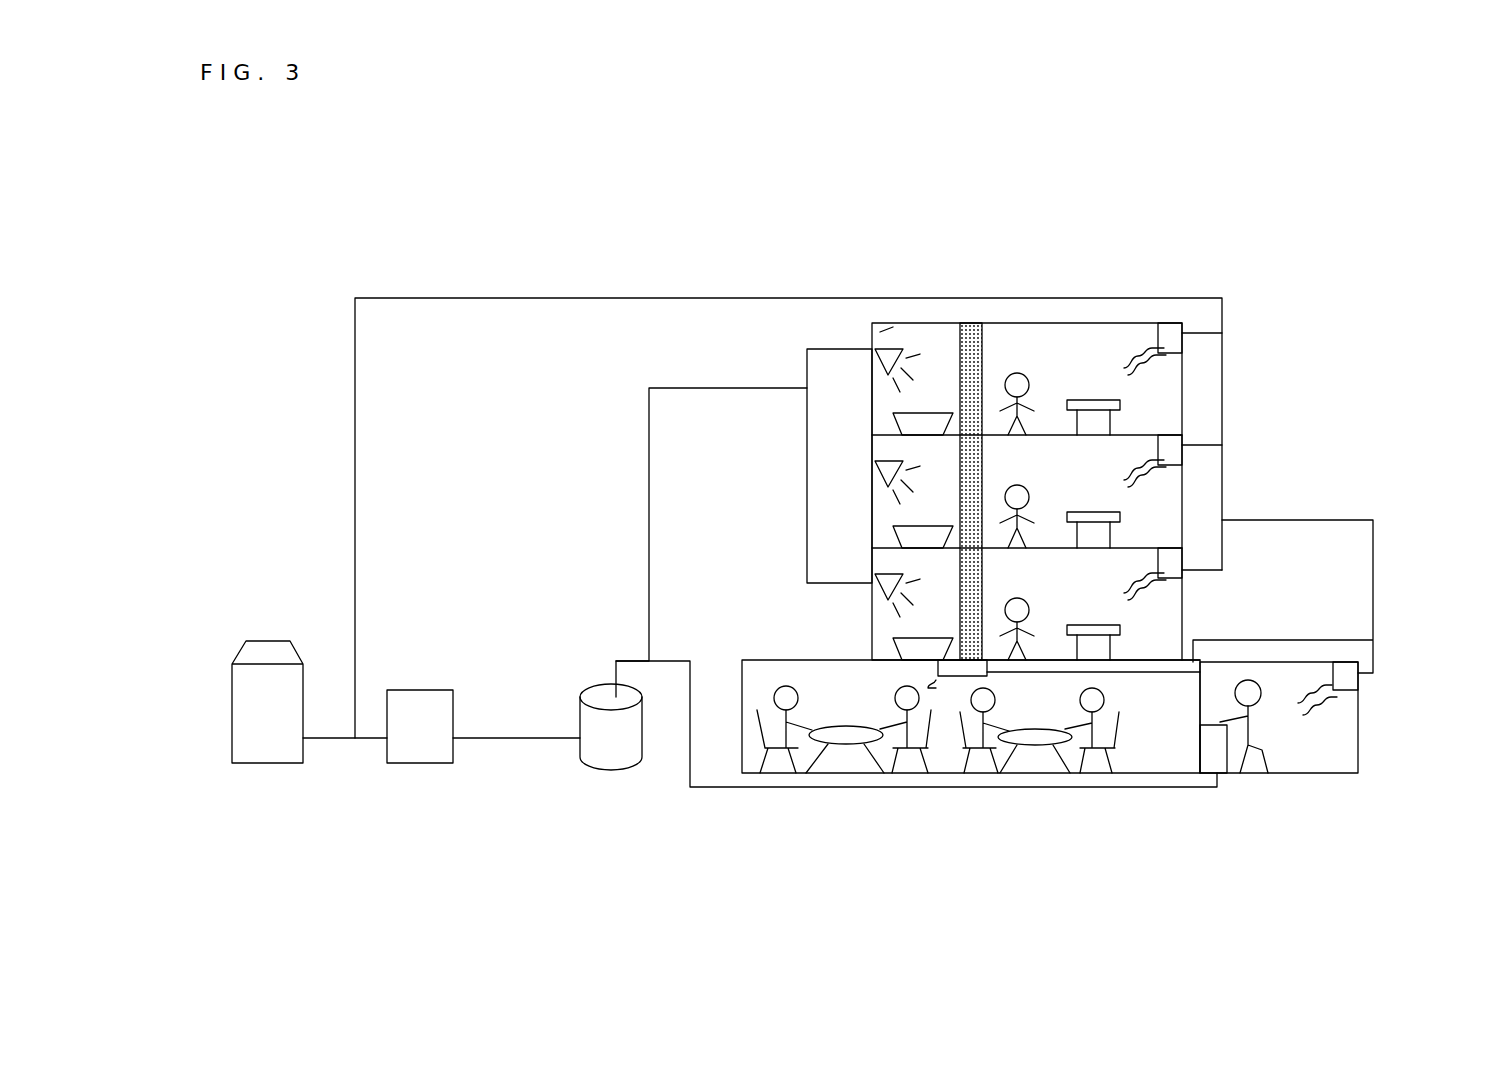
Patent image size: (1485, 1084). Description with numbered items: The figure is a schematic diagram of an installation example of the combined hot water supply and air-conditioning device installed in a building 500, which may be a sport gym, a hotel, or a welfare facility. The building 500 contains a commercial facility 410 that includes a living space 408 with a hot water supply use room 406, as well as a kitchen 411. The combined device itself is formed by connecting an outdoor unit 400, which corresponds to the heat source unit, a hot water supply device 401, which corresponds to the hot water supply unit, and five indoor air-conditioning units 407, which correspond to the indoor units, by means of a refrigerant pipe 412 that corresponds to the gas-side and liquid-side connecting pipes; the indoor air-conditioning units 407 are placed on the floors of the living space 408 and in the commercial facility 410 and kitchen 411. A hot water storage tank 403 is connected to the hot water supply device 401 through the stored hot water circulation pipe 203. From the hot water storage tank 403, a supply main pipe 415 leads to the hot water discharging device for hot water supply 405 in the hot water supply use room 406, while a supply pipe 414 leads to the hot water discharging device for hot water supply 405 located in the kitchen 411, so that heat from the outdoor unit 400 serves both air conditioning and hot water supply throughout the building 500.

The stored hot water circulation pipe 203 is at (503, 738).
The outdoor unit 400 is at (300, 752).
The hot water supply device 401 is at (445, 755).
The hot water storage tank 403 is at (635, 758).
The hot water discharging device for hot water supply 405 is at (875, 360).
The hot water supply use room 406 is at (880, 332).
The indoor air-conditioning unit 407 is at (1173, 342).
The living space 408 is at (1173, 390).
The commercial facility 410 is at (1135, 750).
The kitchen 411 is at (1310, 760).
The refrigerant pipe 412 is at (355, 372).
The supply pipe 414 is at (805, 787).
The supply main pipe 415 is at (649, 627).
The building 500 is at (1082, 322).